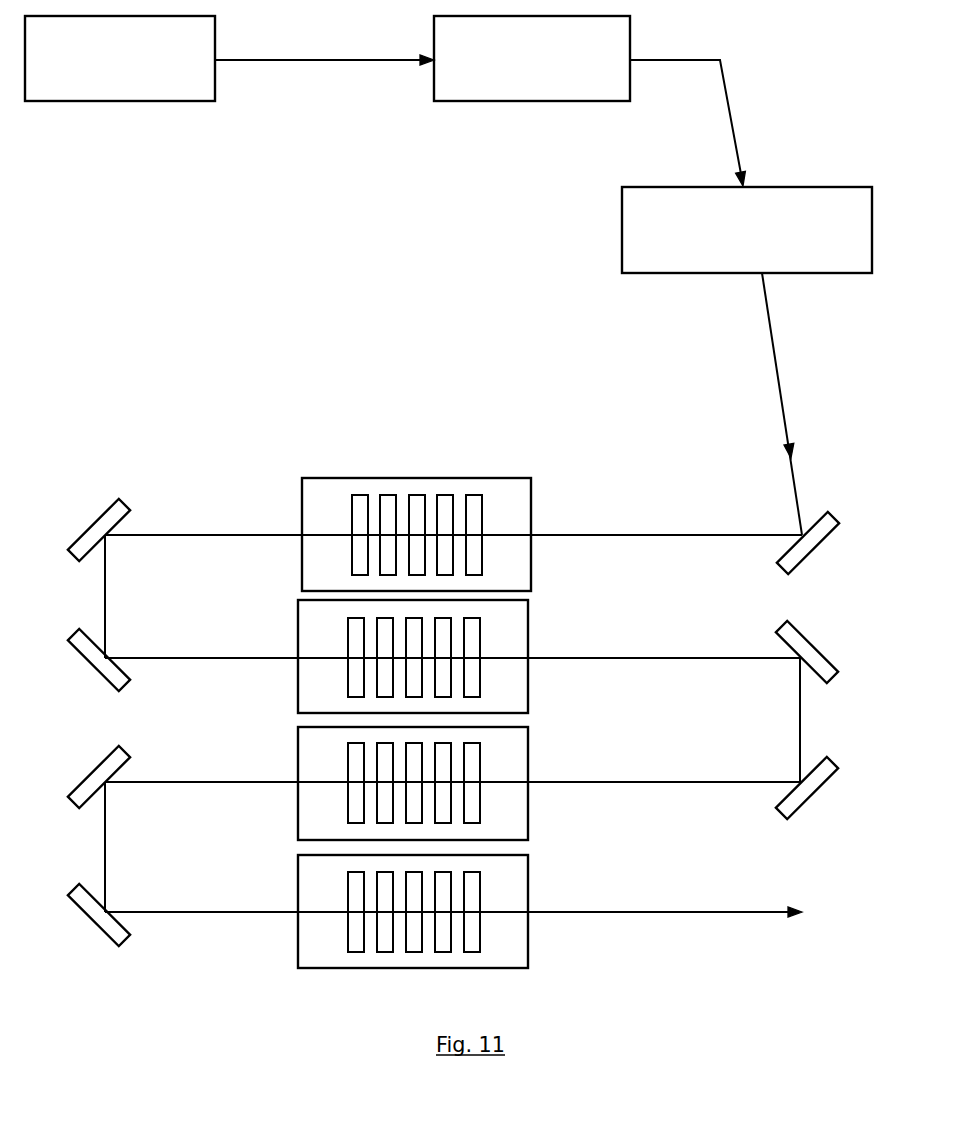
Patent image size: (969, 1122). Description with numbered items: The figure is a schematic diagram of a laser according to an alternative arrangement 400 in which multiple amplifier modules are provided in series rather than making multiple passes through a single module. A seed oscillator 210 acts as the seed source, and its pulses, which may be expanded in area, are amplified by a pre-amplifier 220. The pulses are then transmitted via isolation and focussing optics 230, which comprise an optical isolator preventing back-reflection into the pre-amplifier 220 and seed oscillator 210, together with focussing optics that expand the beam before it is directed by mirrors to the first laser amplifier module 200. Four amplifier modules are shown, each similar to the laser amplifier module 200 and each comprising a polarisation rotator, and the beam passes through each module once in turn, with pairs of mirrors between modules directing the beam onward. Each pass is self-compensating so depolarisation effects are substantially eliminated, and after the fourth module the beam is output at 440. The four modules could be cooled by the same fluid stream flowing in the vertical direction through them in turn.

The seed oscillator 210 is at (120, 58).
The pre-amplifier 220 is at (422, 58).
The isolation and focussing optics 230 is at (747, 166).
The laser amplifier module 200 is at (332, 467).
The alternative arrangement 400 is at (374, 238).
The output 440 is at (467, 935).